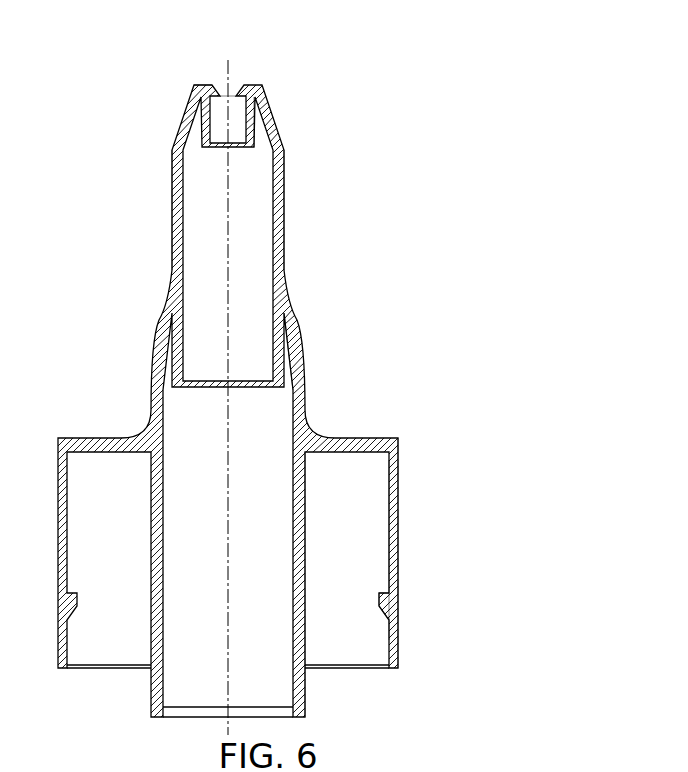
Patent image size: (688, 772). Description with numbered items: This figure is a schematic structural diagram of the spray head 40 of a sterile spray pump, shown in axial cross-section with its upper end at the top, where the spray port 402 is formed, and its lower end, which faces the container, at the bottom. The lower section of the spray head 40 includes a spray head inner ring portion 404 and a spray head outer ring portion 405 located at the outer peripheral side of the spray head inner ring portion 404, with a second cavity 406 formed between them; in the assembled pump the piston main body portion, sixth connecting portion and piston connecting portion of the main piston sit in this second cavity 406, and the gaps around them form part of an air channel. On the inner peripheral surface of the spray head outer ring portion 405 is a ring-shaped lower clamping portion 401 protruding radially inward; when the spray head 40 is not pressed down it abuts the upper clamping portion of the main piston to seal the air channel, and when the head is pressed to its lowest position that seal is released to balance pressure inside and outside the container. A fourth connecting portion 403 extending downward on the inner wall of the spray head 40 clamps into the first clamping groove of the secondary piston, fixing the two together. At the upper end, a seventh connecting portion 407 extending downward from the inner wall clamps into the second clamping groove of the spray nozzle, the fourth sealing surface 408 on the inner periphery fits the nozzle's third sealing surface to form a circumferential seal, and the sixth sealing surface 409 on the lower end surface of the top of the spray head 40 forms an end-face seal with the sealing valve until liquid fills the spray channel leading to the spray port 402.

The spray head 40 is at (138, 198).
The lower clamping portion 401 is at (393, 601).
The spray port 402 is at (231, 90).
The fourth connecting portion 403 is at (276, 352).
The spray head inner ring portion 404 is at (303, 522).
The spray head outer ring portion 405 is at (400, 515).
The second cavity 406 is at (372, 563).
The seventh connecting portion 407 is at (252, 127).
The fourth sealing surface 408 is at (278, 188).
The sixth sealing surface 409 is at (210, 86).